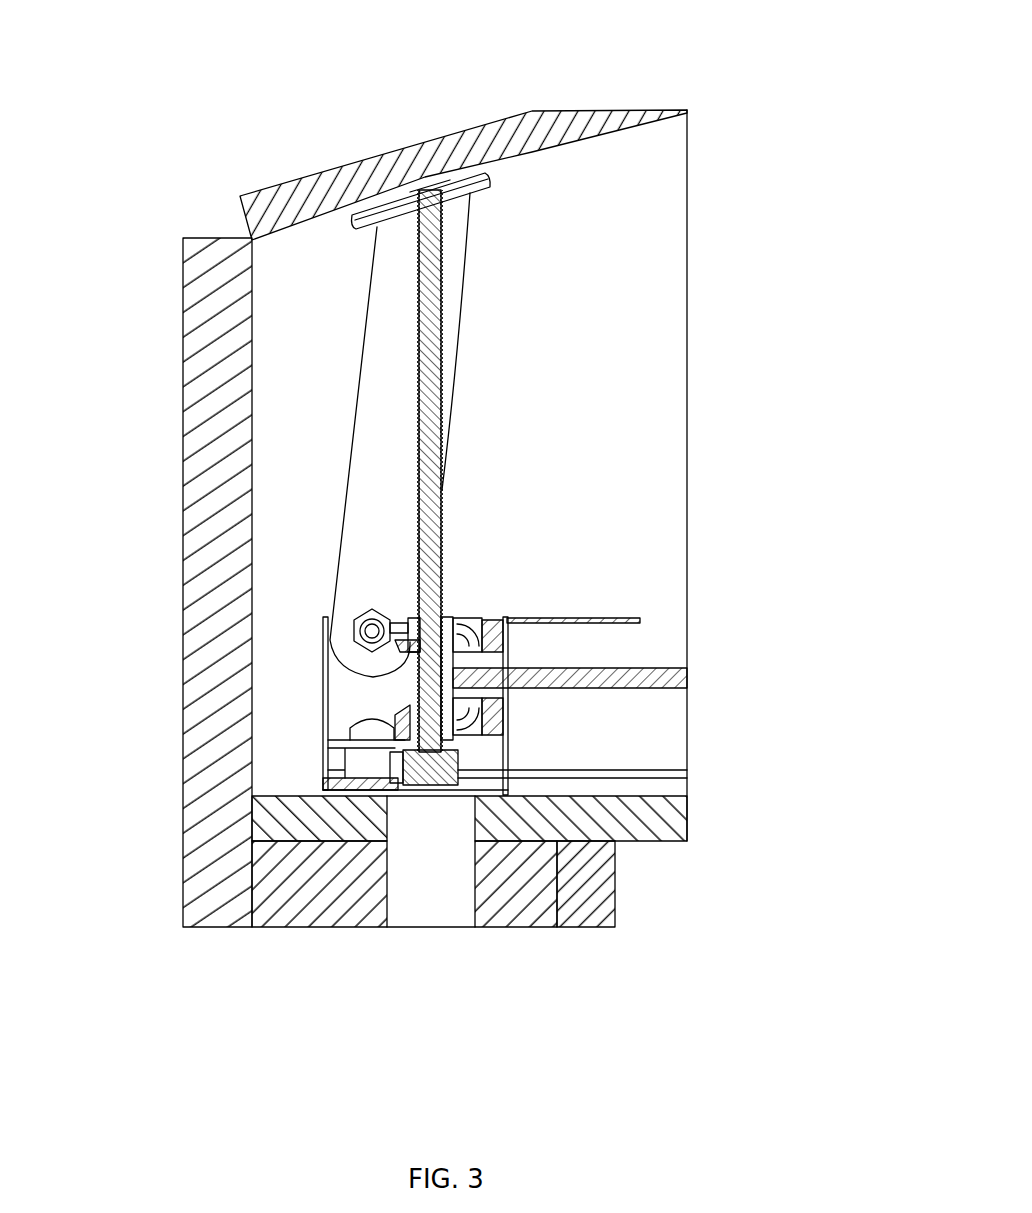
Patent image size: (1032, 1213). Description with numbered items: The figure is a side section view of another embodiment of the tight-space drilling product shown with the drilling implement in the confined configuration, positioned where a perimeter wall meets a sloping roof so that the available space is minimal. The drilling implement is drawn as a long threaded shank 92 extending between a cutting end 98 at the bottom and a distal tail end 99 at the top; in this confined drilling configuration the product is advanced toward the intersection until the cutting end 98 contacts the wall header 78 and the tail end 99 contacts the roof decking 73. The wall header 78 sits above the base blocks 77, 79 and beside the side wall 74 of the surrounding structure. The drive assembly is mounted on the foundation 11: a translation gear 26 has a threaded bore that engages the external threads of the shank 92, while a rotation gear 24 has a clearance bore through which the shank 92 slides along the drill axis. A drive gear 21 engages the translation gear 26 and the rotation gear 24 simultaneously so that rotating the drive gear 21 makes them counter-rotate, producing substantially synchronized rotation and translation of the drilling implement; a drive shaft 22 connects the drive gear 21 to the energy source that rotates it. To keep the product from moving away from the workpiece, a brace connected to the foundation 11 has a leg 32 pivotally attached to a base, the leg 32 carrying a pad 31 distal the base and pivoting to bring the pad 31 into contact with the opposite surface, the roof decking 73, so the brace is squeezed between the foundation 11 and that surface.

The foundation 11 is at (613, 618).
The drive gear 21 is at (508, 655).
The drive shaft 22 is at (755, 725).
The rotation gear 24 is at (410, 700).
The translation gear 26 is at (410, 645).
The pad 31 is at (497, 183).
The leg 32 is at (462, 289).
The roof decking 73 is at (340, 170).
The side wall 74 is at (183, 790).
The base block 77 is at (478, 845).
The wall header 78 is at (300, 927).
The base plate 79 is at (668, 795).
The shank 92 is at (447, 580).
The cutting end 98 is at (433, 787).
The tail end 99 is at (413, 188).